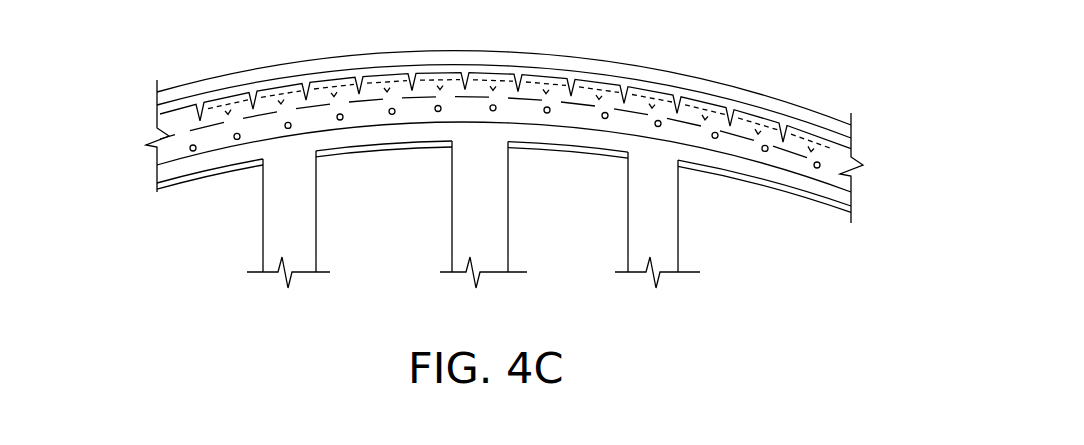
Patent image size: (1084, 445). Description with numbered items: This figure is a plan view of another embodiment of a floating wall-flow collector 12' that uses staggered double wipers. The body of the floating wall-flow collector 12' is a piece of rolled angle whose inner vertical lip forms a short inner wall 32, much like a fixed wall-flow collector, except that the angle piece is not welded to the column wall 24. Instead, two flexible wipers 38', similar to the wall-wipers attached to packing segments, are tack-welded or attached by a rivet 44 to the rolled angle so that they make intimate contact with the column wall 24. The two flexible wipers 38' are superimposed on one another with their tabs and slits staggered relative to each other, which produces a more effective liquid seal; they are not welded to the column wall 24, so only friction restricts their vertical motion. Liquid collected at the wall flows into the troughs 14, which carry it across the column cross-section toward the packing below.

The floating wall-flow collector 12' is at (469, 171).
The trough 14 is at (660, 237).
The column wall 24 is at (607, 66).
The short inner wall 32 is at (208, 178).
The flexible wiper 38' is at (505, 91).
The rivet 44 is at (815, 168).